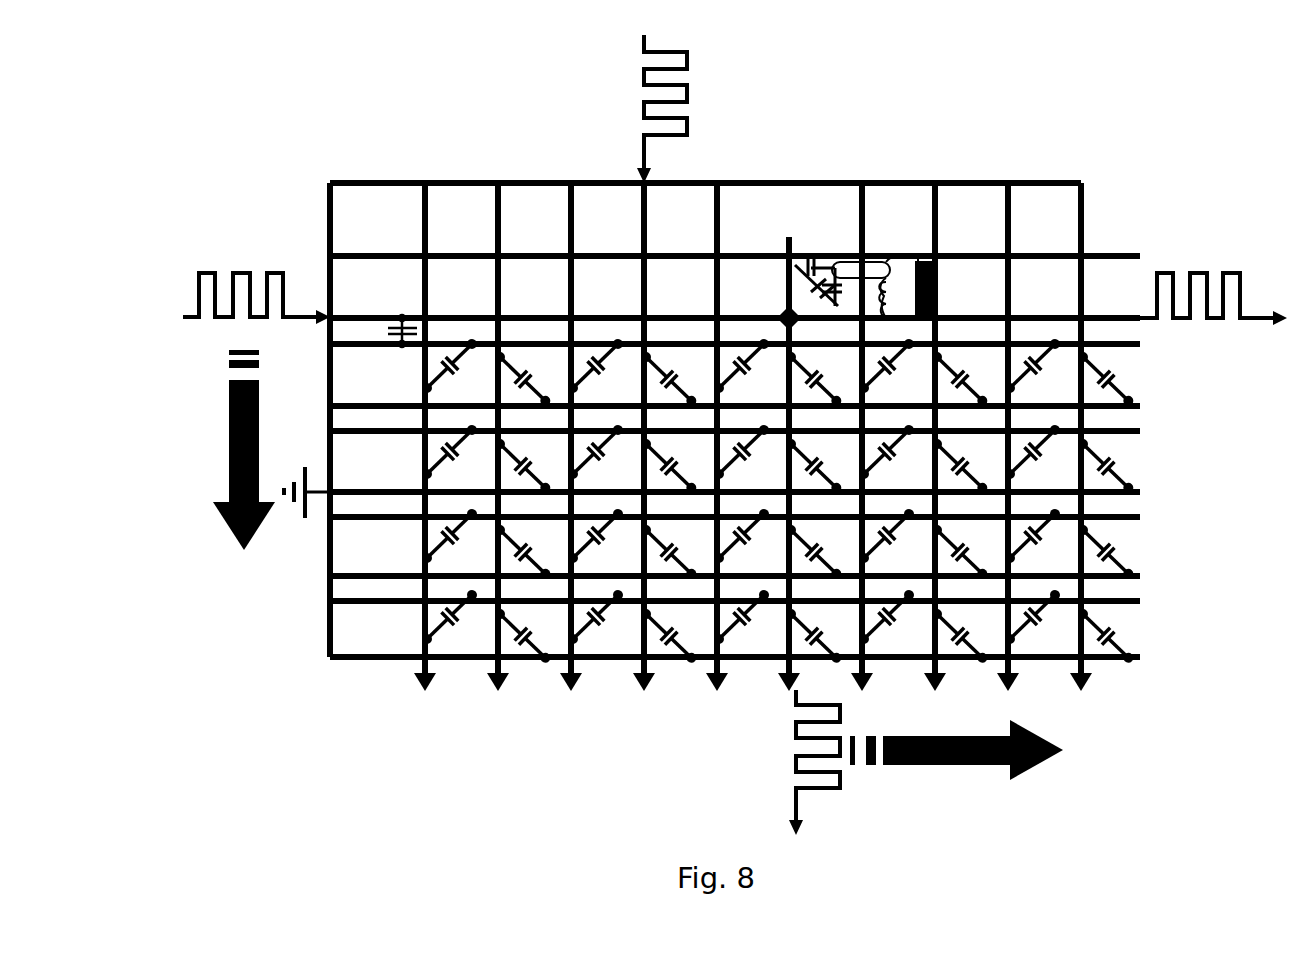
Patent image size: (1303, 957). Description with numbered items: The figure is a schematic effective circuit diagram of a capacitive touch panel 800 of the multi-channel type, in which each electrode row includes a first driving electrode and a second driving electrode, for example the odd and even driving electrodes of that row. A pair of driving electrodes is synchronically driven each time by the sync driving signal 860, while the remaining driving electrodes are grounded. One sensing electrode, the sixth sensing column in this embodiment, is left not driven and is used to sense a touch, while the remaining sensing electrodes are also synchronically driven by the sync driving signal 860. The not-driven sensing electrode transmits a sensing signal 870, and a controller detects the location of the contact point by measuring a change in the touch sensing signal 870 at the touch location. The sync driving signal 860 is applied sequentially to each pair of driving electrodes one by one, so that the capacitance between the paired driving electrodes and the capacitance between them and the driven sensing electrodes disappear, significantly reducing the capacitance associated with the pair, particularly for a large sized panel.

The capacitive touch panel 800 is at (1078, 146).
The sync driving signal 860 is at (270, 272).
The sensing signal 870 is at (796, 755).